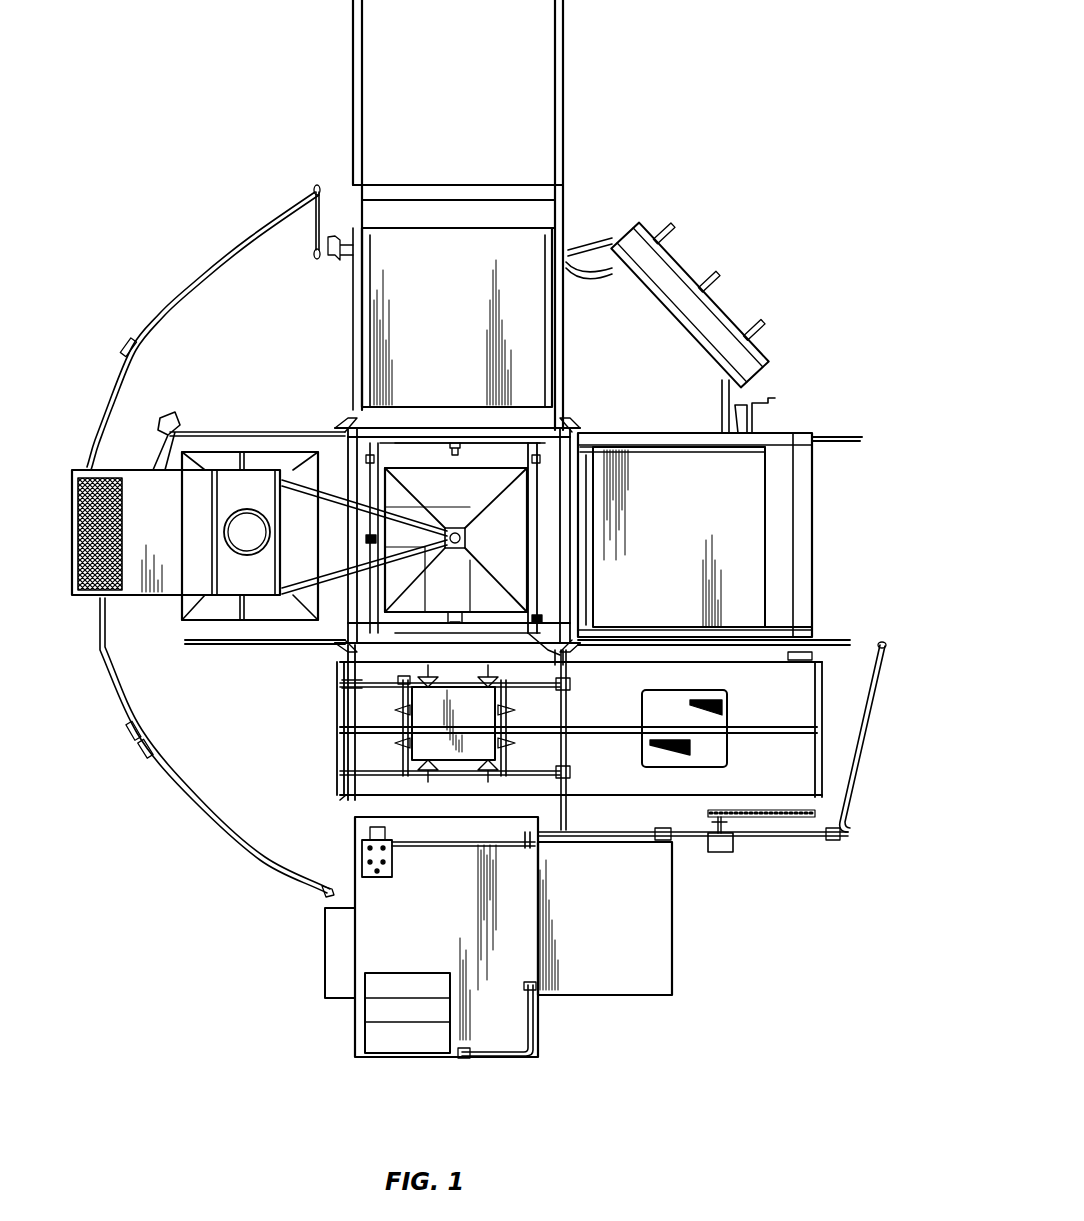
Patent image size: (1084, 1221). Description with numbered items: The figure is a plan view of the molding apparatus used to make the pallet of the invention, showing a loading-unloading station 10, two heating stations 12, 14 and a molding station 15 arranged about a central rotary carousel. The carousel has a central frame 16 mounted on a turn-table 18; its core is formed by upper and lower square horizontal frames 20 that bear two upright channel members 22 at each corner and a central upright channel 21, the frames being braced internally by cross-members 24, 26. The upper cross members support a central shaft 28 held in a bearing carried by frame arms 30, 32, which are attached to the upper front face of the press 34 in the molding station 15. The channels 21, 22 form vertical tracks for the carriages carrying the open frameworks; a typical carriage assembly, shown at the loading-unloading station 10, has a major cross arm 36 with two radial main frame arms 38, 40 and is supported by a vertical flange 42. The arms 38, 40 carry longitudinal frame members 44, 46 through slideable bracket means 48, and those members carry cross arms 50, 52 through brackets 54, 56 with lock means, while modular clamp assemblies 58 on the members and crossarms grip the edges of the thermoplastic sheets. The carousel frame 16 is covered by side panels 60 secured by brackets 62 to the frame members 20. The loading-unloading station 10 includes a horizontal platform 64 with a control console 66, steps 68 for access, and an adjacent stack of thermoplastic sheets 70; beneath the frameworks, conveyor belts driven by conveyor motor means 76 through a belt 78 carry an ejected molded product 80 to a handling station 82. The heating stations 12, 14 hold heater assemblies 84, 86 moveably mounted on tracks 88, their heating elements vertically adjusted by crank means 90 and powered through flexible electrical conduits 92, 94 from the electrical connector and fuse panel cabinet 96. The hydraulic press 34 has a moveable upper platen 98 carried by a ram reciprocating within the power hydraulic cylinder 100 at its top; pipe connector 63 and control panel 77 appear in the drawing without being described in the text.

The loading-unloading station 10 is at (454, 919).
The heating station 12 is at (690, 553).
The heating station 14 is at (466, 321).
The molding station 15 is at (194, 545).
The central frame 16 is at (447, 460).
The turn-table 18 is at (522, 553).
The horizontal frames 20 is at (535, 568).
The central upright channel 21 is at (368, 540).
The upright channel members 22 is at (527, 430).
The cross-member 24 is at (412, 502).
The cross-member 26 is at (493, 480).
The central shaft 28 is at (478, 524).
The frame arm 30 is at (312, 494).
The frame arm 32 is at (316, 578).
The hydraulic press 34 is at (258, 487).
The major cross arm 36 is at (345, 648).
The main frame arm 38 is at (580, 673).
The main frame arm 40 is at (342, 668).
The vertical flange 42 is at (560, 660).
The longitudinal frame member 44 is at (508, 708).
The longitudinal frame member 46 is at (563, 767).
The bracket means 48 is at (570, 690).
The cross arm 50 is at (508, 740).
The cross arm 52 is at (405, 740).
The bracket 54 is at (342, 793).
The bracket 56 is at (403, 688).
The modular clamp assemblies 58 is at (478, 683).
The side panels 60 is at (573, 530).
The bracket 62 is at (565, 490).
The pipe connector 63 is at (530, 850).
The horizontal platform 64 is at (510, 1012).
The control console 66 is at (400, 985).
The steps 68 is at (335, 985).
The stack of thermoplastic sheets 70 is at (652, 895).
The conveyor motor means 76 is at (723, 850).
The control panel 77 is at (370, 838).
The belt 78 is at (773, 820).
The molded product 80 is at (727, 707).
The handling station 82 is at (884, 756).
The heater assembly 84 is at (748, 468).
The heater assembly 86 is at (528, 230).
The tracks 88 is at (563, 88).
The crank means 90 is at (336, 238).
The flexible electrical conduit 92 is at (715, 420).
The flexible electrical conduit 94 is at (590, 262).
The electrical connector and fuse panel cabinet 96 is at (695, 280).
The moveable upper platen 98 is at (205, 455).
The power hydraulic cylinder 100 is at (245, 549).